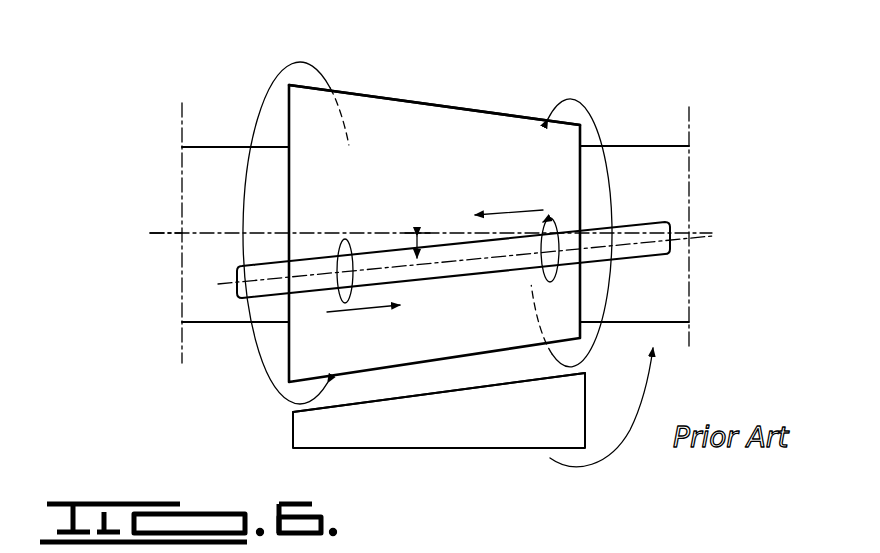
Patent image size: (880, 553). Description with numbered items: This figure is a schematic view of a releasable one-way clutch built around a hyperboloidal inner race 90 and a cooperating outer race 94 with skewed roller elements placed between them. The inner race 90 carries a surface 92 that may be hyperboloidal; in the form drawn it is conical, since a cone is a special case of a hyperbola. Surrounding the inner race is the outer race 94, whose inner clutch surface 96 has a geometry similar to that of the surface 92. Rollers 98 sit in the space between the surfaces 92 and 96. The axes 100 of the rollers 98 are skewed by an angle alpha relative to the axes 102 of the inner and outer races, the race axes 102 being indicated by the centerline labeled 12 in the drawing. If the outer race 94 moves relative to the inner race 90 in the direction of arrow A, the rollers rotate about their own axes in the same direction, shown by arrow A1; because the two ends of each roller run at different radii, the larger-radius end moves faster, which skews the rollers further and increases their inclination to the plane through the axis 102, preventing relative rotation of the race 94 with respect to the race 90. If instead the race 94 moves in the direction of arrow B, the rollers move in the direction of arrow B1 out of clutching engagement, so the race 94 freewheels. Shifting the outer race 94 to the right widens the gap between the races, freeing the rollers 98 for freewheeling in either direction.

The optical axis / incident beam 12 is at (222, 284).
The inner race 90 is at (476, 140).
The hyperboloidal surface 92 is at (410, 100).
The outer race 94 is at (495, 432).
The inner clutch surface 96 is at (437, 386).
The rollers 98 is at (647, 220).
The roller axes 100 is at (452, 258).
The race axes 102 is at (305, 232).
The arrow A is at (300, 62).
The arrow B is at (592, 118).
The arrow A1 is at (352, 296).
The arrow B1 is at (562, 212).